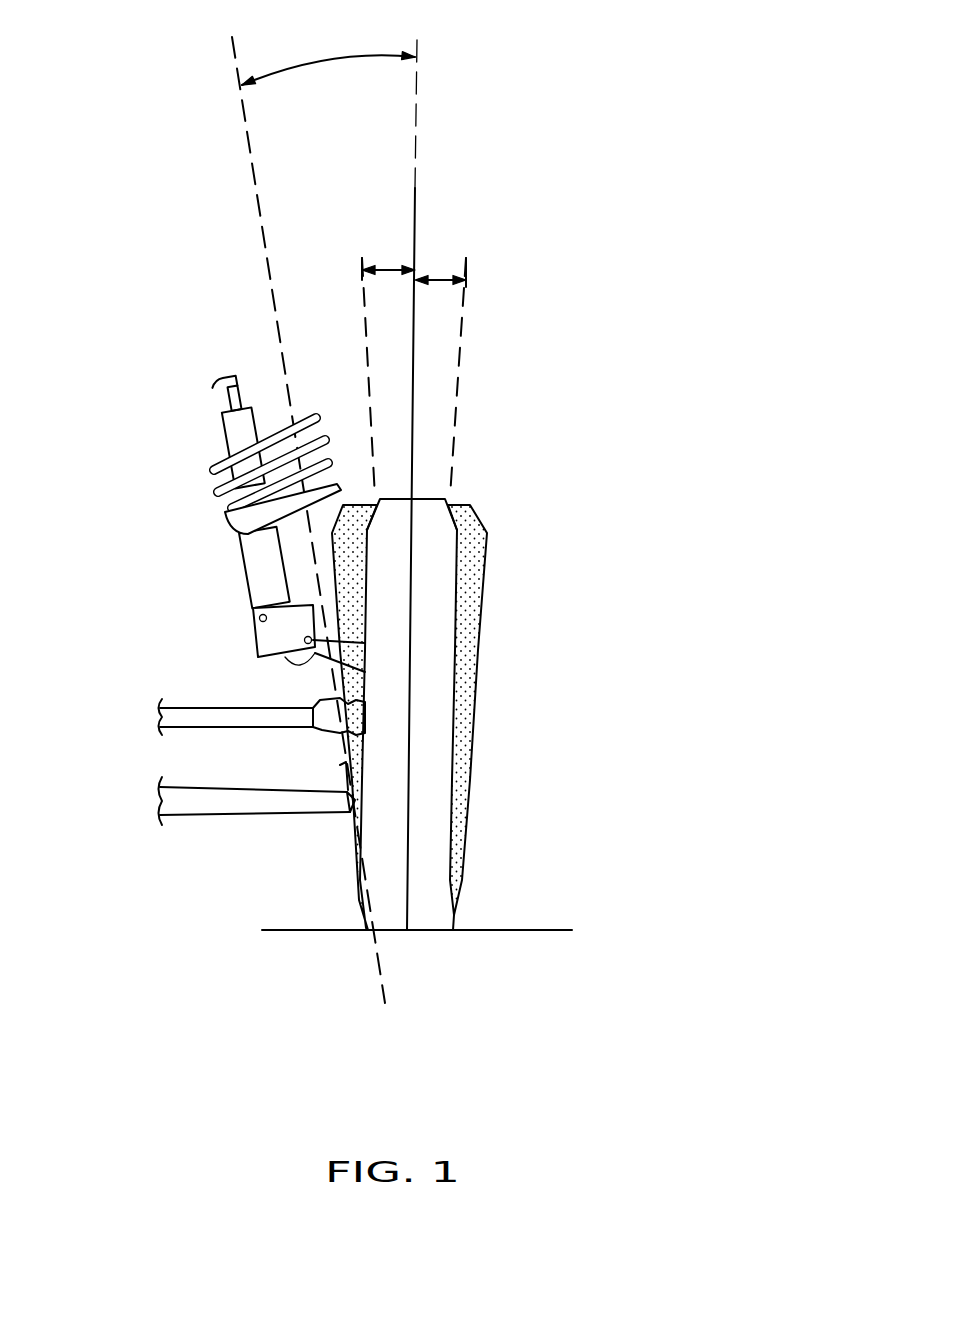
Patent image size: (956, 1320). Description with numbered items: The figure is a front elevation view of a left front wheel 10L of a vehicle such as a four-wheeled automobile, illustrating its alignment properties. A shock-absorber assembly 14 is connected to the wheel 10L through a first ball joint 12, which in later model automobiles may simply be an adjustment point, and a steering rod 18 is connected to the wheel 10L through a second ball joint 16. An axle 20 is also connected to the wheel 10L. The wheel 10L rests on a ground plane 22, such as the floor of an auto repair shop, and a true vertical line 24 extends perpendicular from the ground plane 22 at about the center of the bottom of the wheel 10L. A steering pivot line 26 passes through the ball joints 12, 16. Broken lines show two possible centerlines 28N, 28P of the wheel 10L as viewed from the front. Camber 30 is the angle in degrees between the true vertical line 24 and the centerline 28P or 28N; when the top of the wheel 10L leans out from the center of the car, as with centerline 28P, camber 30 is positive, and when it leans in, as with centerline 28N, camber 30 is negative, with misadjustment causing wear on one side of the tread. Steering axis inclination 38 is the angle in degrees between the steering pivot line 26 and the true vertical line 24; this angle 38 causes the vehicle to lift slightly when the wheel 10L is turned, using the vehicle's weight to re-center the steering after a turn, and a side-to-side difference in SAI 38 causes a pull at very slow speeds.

The left front wheel 10L is at (457, 917).
The first ball joint 12 is at (315, 655).
The shock-absorber assembly 14 is at (260, 555).
The second ball joint 16 is at (350, 813).
The steering rod 18 is at (177, 817).
The axle 20 is at (177, 728).
The ground plane 22 is at (565, 930).
The true vertical line 24 is at (418, 193).
The steering pivot line 26 is at (266, 250).
The negative camber centerline 28N is at (364, 328).
The positive camber centerline 28P is at (457, 402).
The camber 30 is at (390, 262).
The steering axis inclination 38 is at (335, 60).